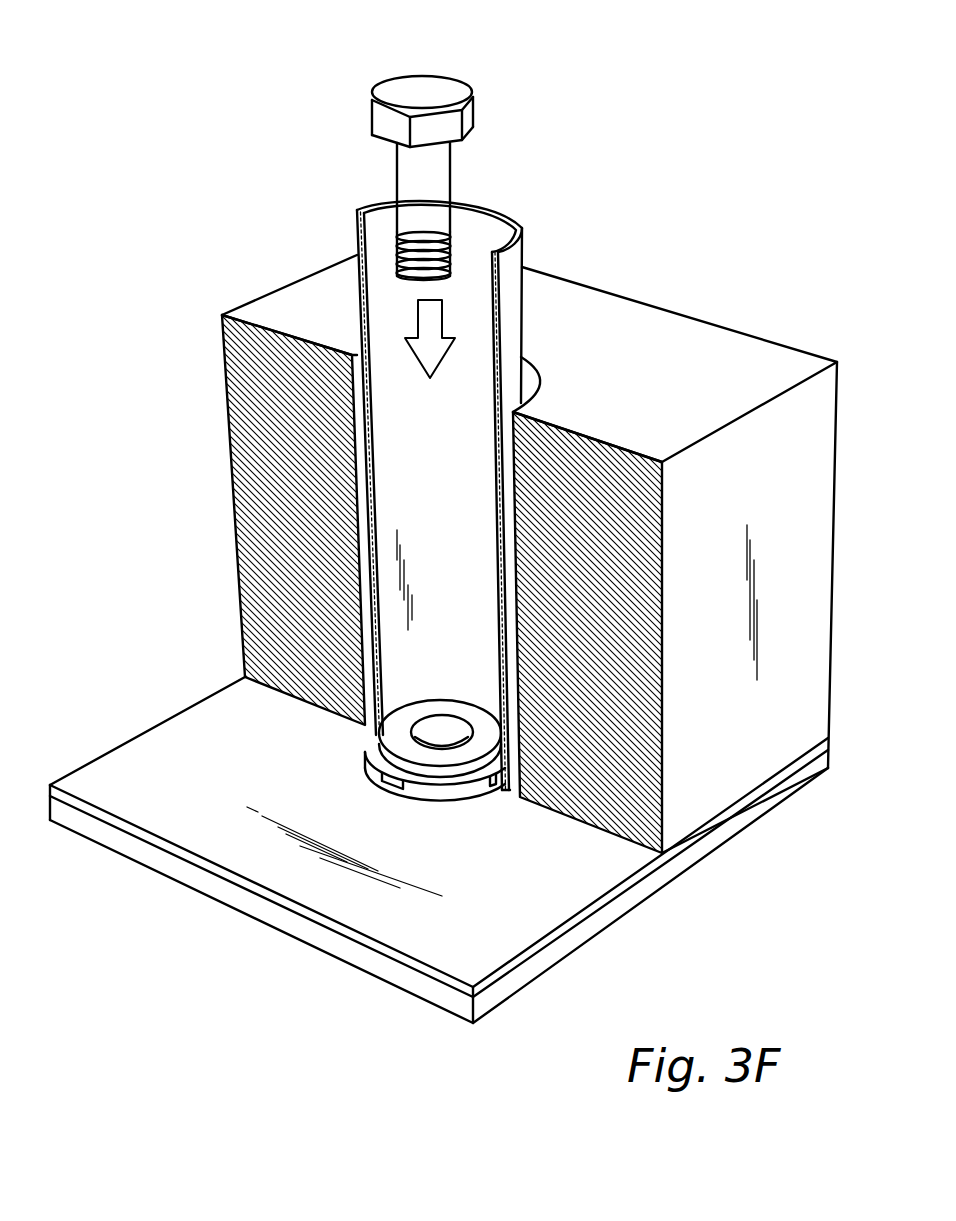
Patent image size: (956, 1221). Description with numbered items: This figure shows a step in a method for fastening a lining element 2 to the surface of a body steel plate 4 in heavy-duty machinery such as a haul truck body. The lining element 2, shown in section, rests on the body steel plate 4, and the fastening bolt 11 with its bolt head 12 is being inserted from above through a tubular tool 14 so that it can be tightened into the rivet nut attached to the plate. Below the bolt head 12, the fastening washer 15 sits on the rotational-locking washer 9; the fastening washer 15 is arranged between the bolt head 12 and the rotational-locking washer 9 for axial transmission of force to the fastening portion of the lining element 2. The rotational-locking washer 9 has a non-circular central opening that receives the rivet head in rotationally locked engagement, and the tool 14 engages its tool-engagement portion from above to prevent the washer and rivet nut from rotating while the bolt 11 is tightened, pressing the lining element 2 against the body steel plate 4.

The lining element 2 is at (797, 311).
The body steel plate 4 is at (690, 851).
The rotational-locking washer 9 is at (466, 790).
The fastening bolt 11 is at (434, 178).
The bolt head 12 is at (423, 97).
The tool 14 is at (515, 297).
The fastening washer 15 is at (482, 722).